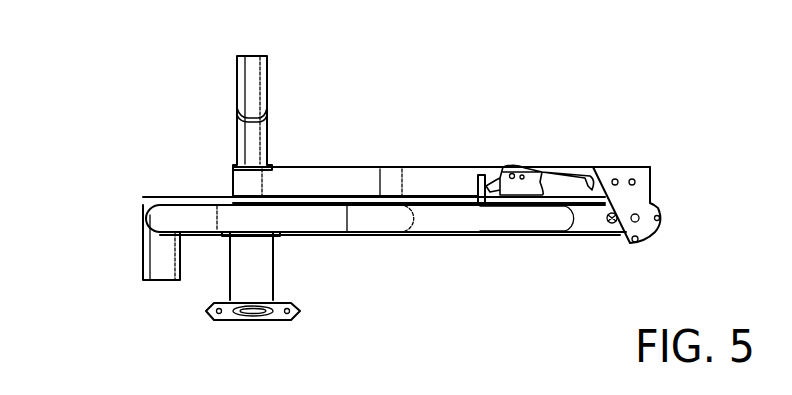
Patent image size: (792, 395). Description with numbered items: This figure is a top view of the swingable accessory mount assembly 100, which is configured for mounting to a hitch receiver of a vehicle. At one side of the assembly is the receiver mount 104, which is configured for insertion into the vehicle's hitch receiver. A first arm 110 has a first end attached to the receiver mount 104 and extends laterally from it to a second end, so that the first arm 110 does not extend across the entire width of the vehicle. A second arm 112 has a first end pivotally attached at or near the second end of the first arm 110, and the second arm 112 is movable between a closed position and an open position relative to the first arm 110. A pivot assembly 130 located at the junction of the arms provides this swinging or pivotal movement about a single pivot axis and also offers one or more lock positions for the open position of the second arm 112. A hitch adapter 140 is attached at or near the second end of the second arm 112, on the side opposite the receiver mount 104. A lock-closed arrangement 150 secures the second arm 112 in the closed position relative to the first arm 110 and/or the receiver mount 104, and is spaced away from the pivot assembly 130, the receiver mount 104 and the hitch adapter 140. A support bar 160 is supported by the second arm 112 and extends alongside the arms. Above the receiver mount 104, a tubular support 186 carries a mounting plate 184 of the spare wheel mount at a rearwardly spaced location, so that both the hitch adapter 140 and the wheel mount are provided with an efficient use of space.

The accessory mount assembly 100 is at (424, 196).
The receiver mount 104 is at (272, 129).
The first arm 110 is at (437, 175).
The second arm 112 is at (593, 222).
The pivot assembly 130 is at (658, 203).
The hitch adapter 140 is at (153, 282).
The lock-closed arrangement 150 is at (525, 158).
The support bar 160 is at (455, 237).
The mounting plate 184 is at (278, 322).
The tubular support 186 is at (275, 273).